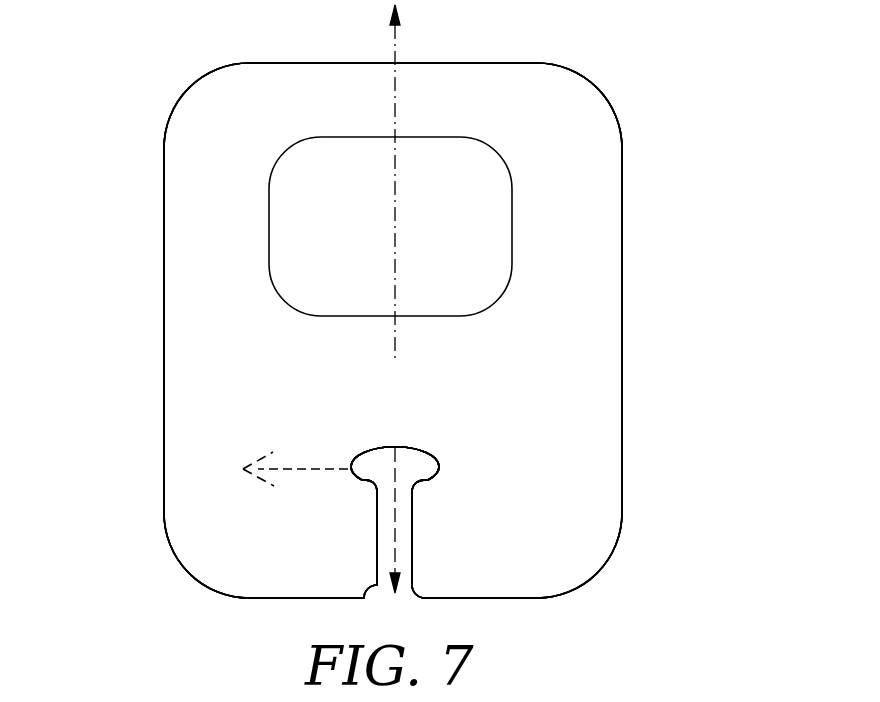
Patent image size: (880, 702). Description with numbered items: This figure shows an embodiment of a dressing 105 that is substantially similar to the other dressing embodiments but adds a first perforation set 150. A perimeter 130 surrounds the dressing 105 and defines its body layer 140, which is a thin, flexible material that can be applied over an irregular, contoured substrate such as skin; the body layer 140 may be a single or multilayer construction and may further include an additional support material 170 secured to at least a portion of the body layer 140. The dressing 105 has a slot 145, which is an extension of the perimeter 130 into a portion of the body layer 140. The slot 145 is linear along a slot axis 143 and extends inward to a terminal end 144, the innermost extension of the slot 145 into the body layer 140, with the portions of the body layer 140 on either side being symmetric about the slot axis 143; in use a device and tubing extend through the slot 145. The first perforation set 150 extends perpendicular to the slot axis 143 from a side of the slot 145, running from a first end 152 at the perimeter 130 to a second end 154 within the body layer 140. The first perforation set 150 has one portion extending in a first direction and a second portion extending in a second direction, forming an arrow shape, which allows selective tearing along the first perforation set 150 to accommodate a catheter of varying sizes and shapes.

The dressing 105 is at (674, 95).
The perimeter 130 is at (164, 245).
The support material 170 is at (195, 328).
The body layer 140 is at (187, 377).
The second end 154 is at (390, 226).
The slot axis 143 is at (395, 38).
The first end 152 is at (395, 449).
The terminal end 144 is at (363, 452).
The first perforation set 150 is at (299, 466).
The slot 145 is at (393, 537).